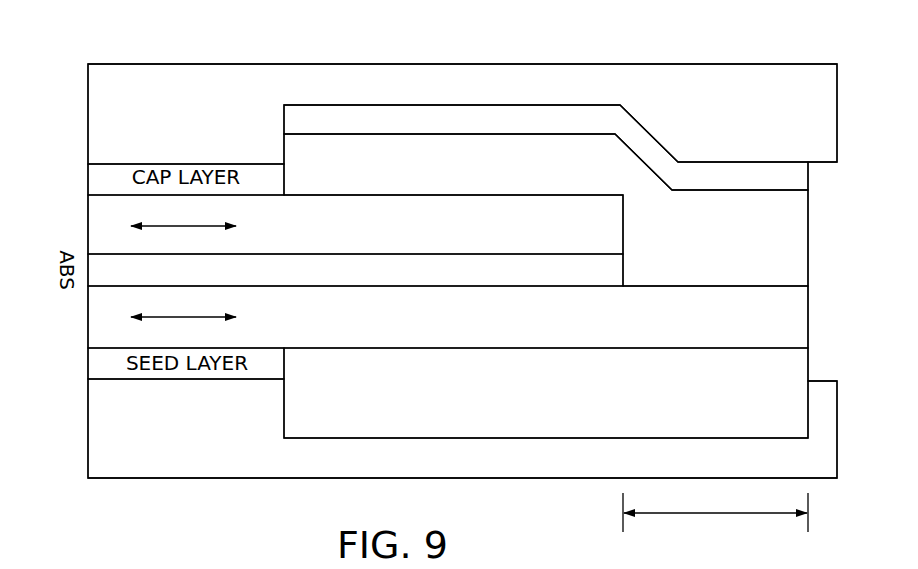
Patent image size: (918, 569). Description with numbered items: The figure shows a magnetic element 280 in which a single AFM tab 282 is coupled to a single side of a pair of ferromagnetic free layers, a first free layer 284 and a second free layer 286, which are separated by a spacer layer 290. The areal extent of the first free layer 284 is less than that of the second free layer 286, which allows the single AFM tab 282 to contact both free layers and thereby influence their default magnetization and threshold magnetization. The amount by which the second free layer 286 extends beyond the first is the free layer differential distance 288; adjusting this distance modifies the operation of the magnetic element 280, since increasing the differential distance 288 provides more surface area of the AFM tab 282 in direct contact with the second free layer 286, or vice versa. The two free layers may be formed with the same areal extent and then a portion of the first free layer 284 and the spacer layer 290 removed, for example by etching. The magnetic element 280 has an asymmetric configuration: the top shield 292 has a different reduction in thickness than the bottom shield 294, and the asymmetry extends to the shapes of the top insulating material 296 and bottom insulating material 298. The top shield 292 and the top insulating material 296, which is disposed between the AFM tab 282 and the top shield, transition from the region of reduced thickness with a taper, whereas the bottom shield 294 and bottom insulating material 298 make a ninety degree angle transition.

The magnetic element 280 is at (114, 28).
The top shield 292 is at (462, 114).
The top insulating material 296 is at (546, 147).
The AFM tab 282 is at (546, 210).
The first free layer 284 is at (355, 224).
The spacer layer 290 is at (355, 270).
The second free layer 286 is at (448, 317).
The bottom insulating material 298 is at (546, 393).
The bottom shield 294 is at (462, 428).
The free layer differential distance 288 is at (715, 517).